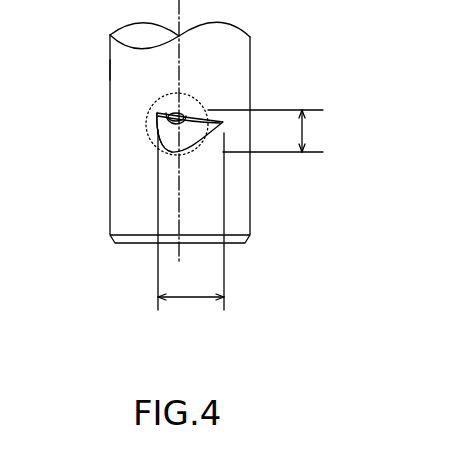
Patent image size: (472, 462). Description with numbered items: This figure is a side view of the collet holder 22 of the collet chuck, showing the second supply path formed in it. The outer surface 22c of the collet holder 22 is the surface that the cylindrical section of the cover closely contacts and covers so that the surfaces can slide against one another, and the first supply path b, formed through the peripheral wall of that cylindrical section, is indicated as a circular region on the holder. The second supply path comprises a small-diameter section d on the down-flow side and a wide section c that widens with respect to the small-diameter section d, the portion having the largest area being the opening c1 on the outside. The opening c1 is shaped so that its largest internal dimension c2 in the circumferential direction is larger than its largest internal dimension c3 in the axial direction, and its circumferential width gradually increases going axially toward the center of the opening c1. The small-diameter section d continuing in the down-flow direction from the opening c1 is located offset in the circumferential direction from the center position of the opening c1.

The collet holder 22 is at (110, 37).
The outer surface of the collet holder 22c is at (118, 68).
The first supply path b is at (208, 103).
The wide section c is at (192, 137).
The small-diameter section d is at (160, 115).
The opening c1 is at (160, 145).
The largest internal dimension in the circumferential direction c2 is at (191, 231).
The largest internal dimension in the axial direction c3 is at (272, 131).